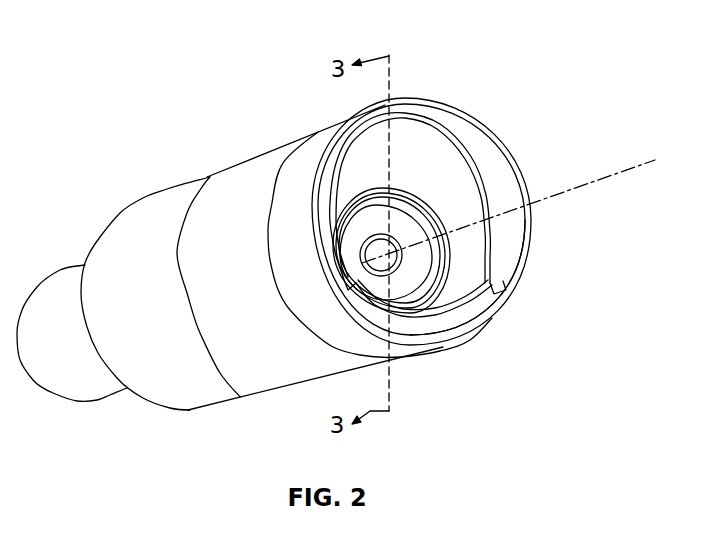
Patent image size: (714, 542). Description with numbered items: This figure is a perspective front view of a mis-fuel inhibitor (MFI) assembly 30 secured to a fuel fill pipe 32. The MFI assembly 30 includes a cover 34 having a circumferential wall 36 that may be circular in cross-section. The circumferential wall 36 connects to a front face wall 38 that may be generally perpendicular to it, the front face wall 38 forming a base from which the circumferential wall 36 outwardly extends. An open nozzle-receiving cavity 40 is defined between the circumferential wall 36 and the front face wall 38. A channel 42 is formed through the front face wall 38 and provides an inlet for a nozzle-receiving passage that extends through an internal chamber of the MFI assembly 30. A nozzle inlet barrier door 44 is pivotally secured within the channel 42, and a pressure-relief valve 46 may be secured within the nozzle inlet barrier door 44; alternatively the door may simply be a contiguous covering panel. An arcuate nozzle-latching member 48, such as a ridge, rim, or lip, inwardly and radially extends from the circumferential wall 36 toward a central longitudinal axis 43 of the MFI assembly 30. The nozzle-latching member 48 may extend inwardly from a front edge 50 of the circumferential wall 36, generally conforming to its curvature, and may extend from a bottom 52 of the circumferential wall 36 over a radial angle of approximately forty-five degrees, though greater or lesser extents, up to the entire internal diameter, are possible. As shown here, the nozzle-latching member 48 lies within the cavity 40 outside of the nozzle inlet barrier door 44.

The mis-fuel inhibitor (MFI) assembly 30 is at (488, 118).
The fuel fill pipe 32 is at (180, 176).
The cover 34 is at (515, 160).
The circumferential wall 36 is at (418, 97).
The front face wall 38 is at (375, 168).
The nozzle-receiving cavity 40 is at (470, 240).
The channel 42 is at (420, 196).
The central longitudinal axis 43 is at (515, 211).
The nozzle inlet barrier door 44 is at (413, 277).
The pressure-relief valve 46 is at (380, 267).
The nozzle-latching member 48 is at (486, 300).
The front edge 50 is at (522, 270).
The bottom 52 is at (426, 352).